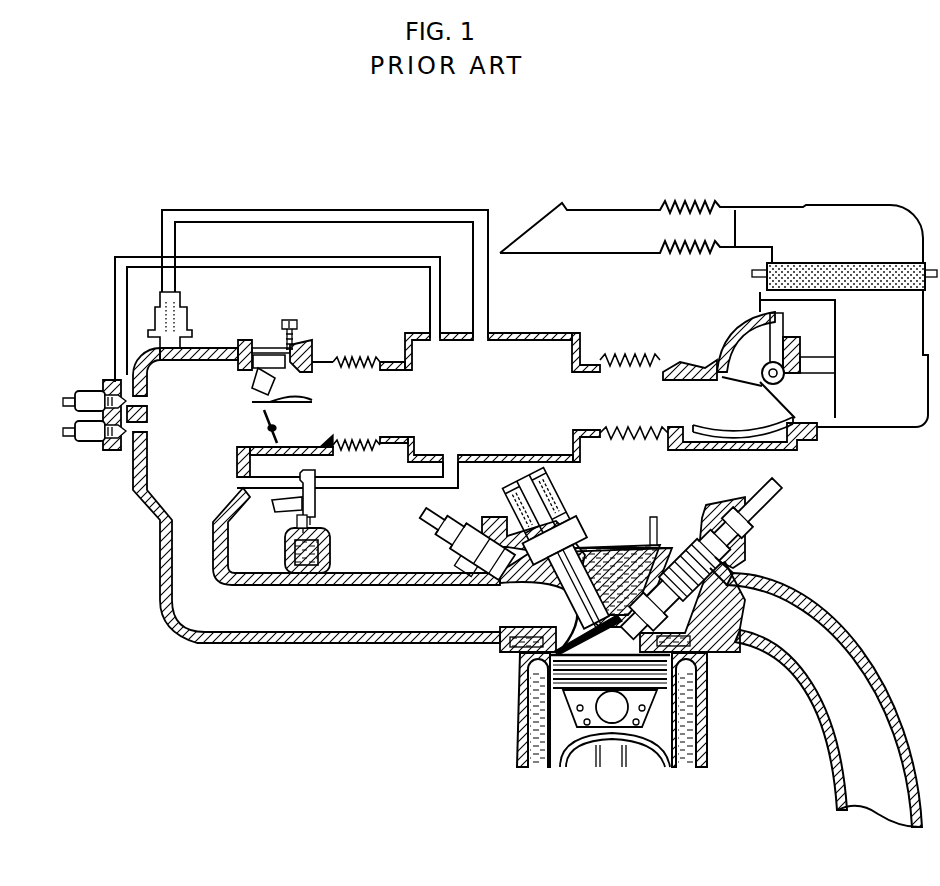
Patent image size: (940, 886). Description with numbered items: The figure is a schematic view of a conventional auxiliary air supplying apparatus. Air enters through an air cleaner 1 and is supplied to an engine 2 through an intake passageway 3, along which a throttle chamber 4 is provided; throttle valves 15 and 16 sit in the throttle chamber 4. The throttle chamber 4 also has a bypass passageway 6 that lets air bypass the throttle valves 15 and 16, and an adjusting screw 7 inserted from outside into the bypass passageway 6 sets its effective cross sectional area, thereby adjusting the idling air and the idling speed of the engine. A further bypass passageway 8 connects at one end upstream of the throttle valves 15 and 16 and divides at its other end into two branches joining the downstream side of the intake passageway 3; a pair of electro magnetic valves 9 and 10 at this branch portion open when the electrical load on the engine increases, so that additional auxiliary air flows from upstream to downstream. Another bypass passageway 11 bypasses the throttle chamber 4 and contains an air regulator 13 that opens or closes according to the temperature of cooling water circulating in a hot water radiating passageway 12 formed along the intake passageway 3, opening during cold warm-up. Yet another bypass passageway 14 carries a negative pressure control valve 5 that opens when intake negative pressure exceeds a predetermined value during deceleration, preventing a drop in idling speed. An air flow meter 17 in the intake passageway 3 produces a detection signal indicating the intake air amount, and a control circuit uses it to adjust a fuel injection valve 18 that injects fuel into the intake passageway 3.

The air cleaner 1 is at (855, 210).
The engine 2 is at (516, 705).
The intake passageway 3 is at (343, 350).
The throttle chamber 4 is at (247, 345).
The negative pressure control valve 5 is at (185, 318).
The bypass passageway 6 is at (270, 355).
The adjusting screw 7 is at (295, 328).
The bypass passageway 8 is at (132, 263).
The electro magnetic valve 9 is at (86, 391).
The electro magnetic valve 10 is at (90, 441).
The bypass passageway 11 is at (387, 489).
The hot water radiating passageway 12 is at (294, 548).
The air regulator 13 is at (290, 507).
The bypass passageway 14 is at (423, 210).
The throttle valve 15 is at (258, 392).
The throttle valve 16 is at (262, 437).
The air flow meter 17 is at (790, 447).
The fuel injection valve 18 is at (440, 548).